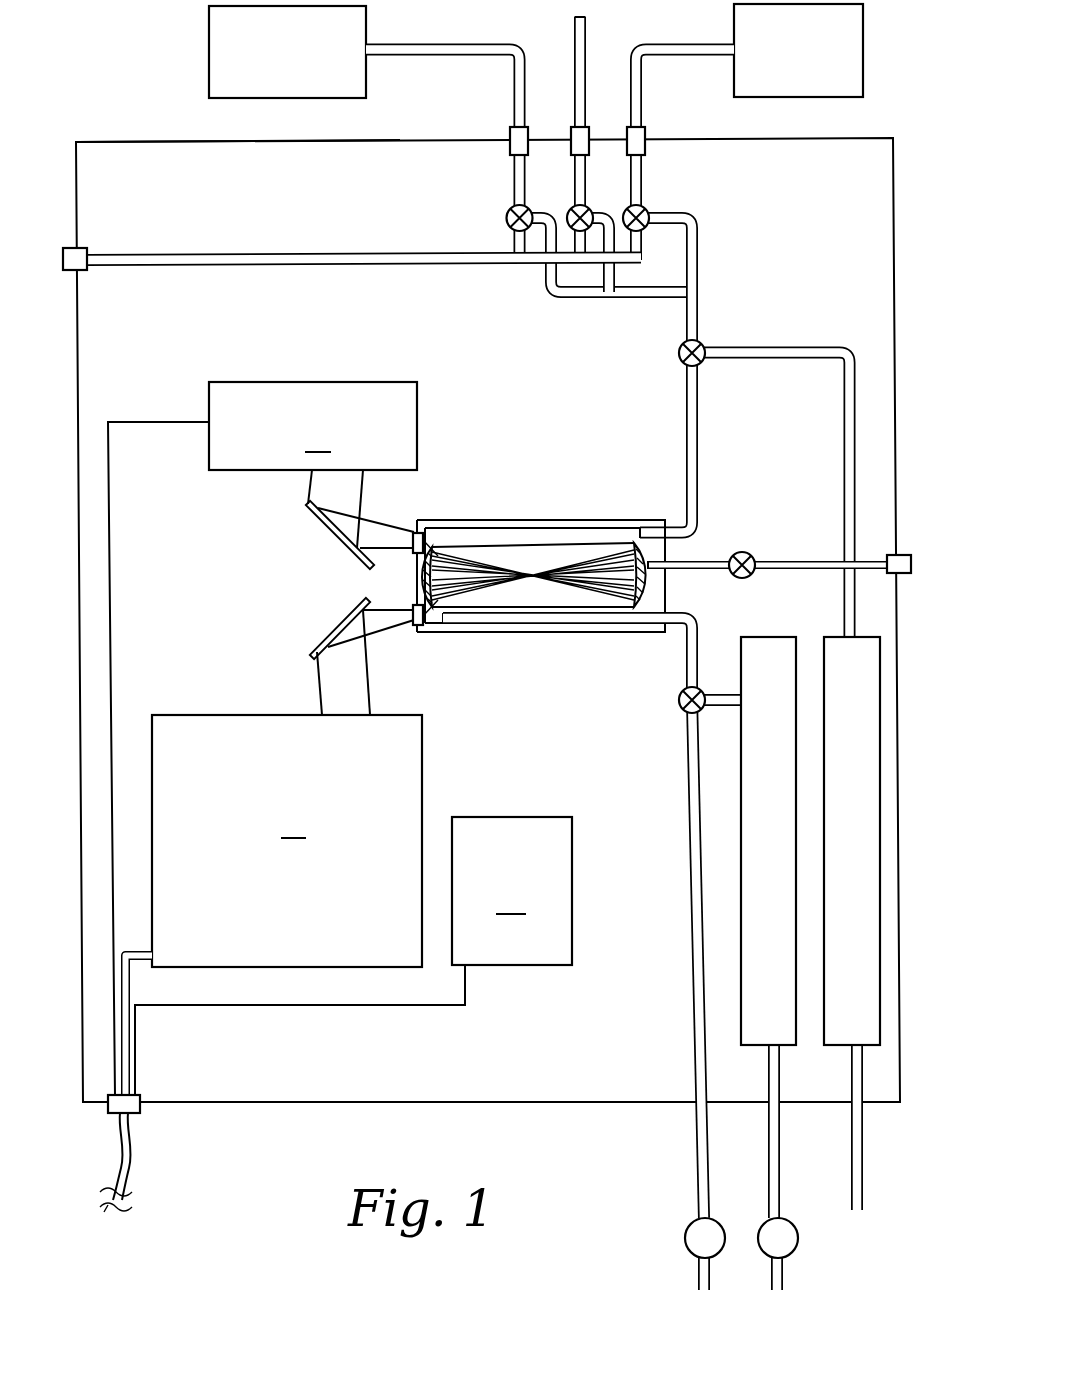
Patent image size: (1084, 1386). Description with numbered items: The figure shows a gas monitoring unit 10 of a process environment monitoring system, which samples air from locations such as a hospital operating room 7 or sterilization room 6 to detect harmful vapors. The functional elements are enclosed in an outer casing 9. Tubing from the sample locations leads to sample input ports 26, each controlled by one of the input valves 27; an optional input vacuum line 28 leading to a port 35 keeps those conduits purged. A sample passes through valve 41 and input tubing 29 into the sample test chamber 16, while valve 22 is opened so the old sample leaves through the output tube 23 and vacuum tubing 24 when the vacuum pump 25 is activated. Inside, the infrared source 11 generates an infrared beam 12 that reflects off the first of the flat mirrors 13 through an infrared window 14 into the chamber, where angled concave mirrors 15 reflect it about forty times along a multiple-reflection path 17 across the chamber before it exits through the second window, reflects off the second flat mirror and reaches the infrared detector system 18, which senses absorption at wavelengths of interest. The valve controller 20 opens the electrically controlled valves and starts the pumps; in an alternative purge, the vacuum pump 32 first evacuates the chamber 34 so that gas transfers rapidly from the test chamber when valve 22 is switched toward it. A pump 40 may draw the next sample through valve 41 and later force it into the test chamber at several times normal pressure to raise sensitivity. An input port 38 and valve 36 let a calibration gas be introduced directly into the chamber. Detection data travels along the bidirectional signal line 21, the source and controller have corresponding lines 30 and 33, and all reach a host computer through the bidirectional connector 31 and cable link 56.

The sterilization room 6 is at (208, 47).
The operating room 7 is at (733, 76).
The outer casing 9 is at (205, 141).
The gas monitoring unit 10 is at (136, 134).
The infrared source 11 is at (287, 841).
The infrared beam 12 is at (314, 686).
The flat mirrors 13 is at (342, 624).
The infrared window 14 is at (419, 532).
The concave mirrors 15 is at (456, 566).
The sample test chamber 16 is at (527, 510).
The multiple-reflection light path 17 is at (533, 586).
The infrared detector system 18 is at (313, 465).
The valve controller 20 is at (512, 891).
The bidirectional signal line 21 is at (106, 568).
The valve 22 is at (679, 700).
The output tube 23 is at (600, 634).
The vacuum tubing 24 is at (695, 1056).
The vacuum pump 25 is at (691, 1222).
The sample input ports 26 is at (510, 149).
The input valves 27 is at (506, 218).
The input vacuum line 28 is at (180, 256).
The input tubing 29 is at (686, 420).
The bidirectional signal line 30 is at (140, 955).
The bidirectional connector 31 is at (140, 1094).
The vacuum pump 32 is at (792, 1222).
The bidirectional signal line 33 is at (378, 1003).
The chamber 34 is at (766, 636).
The port 35 is at (88, 256).
The valve 36 is at (752, 554).
The input port 38 is at (889, 554).
The pump 40 is at (845, 636).
The valve 41 is at (679, 353).
The bidirectional cable link 56 is at (130, 1160).